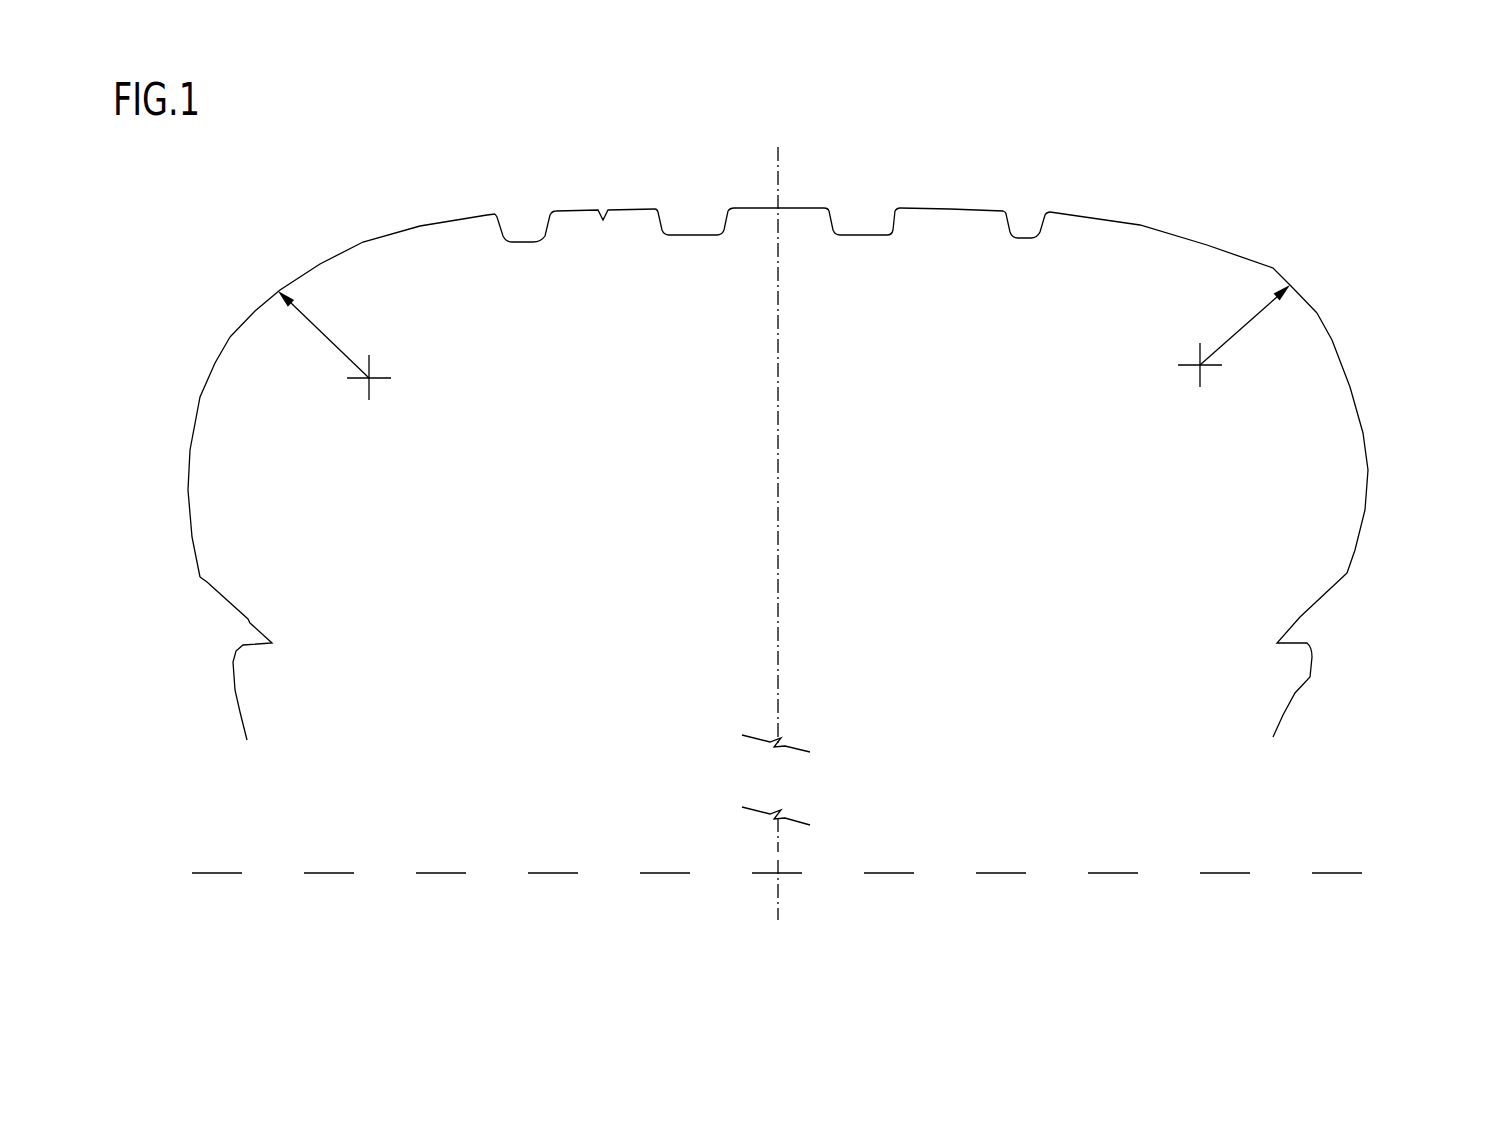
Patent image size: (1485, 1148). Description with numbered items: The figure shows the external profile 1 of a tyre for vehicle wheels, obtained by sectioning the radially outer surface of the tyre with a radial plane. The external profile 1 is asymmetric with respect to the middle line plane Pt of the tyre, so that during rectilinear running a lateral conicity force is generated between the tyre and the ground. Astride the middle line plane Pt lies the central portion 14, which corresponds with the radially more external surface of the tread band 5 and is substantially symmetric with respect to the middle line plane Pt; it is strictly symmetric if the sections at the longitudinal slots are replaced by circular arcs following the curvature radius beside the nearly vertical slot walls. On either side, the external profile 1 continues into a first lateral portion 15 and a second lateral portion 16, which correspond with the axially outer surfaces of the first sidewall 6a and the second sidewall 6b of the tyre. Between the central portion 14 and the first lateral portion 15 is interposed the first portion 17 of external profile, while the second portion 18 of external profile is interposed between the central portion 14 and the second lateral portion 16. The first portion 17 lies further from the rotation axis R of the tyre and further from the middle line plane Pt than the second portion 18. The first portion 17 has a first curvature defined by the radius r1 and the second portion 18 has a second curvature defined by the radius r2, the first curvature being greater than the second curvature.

The external profile 1 is at (1286, 193).
The tread band 5 is at (676, 178).
The central portion 14 is at (756, 207).
The first lateral portion 15 is at (1372, 470).
The second lateral portion 16 is at (193, 540).
The first portion of external profile 17 is at (1278, 272).
The second portion of external profile 18 is at (283, 286).
The first sidewall 6a is at (1378, 560).
The second sidewall 6b is at (172, 458).
The first curvature radius r1 is at (1247, 323).
The second curvature radius r2 is at (333, 341).
The middle line plane Pt is at (782, 168).
The rotation axis R is at (1340, 870).